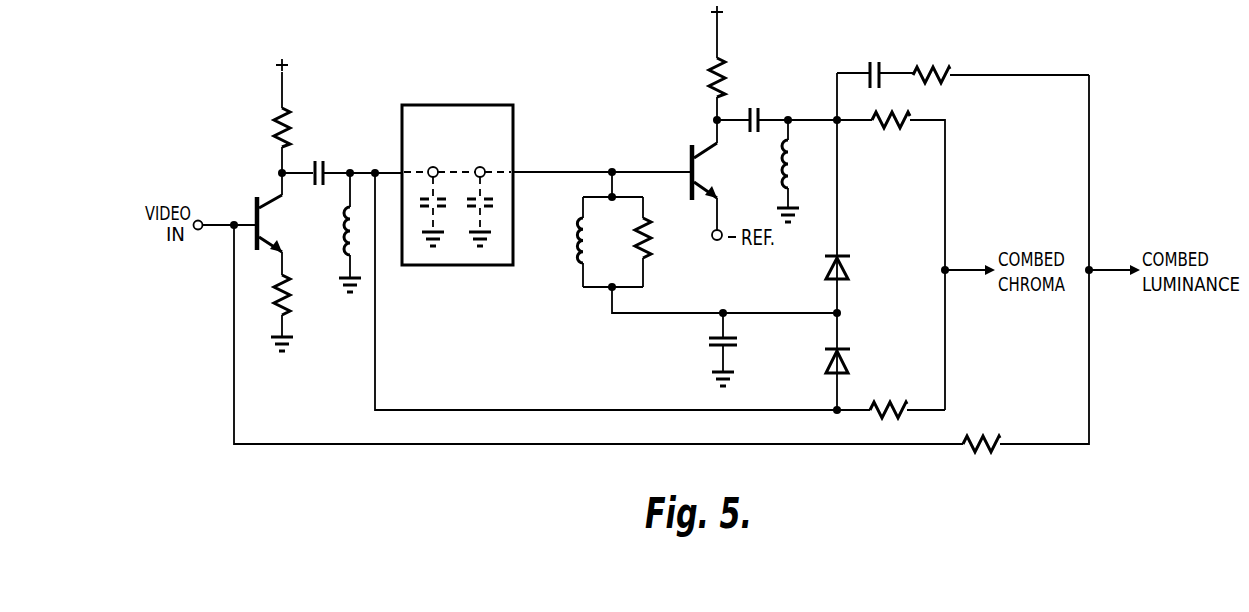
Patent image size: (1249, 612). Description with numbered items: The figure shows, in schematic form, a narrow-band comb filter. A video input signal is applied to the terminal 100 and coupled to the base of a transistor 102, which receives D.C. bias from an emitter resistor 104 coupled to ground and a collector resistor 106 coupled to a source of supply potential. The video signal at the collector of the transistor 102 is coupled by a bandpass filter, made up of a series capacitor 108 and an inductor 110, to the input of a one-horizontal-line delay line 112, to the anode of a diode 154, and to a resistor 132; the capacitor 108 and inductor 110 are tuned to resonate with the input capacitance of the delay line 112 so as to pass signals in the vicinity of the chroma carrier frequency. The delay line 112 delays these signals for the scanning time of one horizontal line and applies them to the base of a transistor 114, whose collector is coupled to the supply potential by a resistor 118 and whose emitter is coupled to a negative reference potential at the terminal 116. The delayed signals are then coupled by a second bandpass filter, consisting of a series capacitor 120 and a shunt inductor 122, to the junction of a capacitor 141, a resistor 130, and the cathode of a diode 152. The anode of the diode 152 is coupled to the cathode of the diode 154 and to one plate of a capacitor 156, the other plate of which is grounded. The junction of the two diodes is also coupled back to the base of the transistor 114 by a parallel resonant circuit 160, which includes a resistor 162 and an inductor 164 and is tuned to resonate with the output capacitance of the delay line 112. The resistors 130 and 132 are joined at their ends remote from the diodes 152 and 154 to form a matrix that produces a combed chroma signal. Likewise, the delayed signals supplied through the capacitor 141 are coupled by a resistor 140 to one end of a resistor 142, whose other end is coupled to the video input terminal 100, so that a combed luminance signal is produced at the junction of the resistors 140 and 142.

The terminal 100 is at (212, 198).
The transistor 102 is at (260, 230).
The emitter resistor 104 is at (292, 297).
The collector resistor 106 is at (270, 130).
The series capacitor 108 is at (328, 160).
The inductor 110 is at (342, 232).
The 1-H delay line 112 is at (472, 84).
The transistor 114 is at (700, 178).
The terminal 116 is at (712, 233).
The resistor 118 is at (709, 82).
The series capacitor 120 is at (761, 112).
The shunt inductor 122 is at (779, 166).
The resistor 130 is at (894, 128).
The resistor 132 is at (893, 385).
The resistor 140 is at (930, 63).
The capacitor 141 is at (876, 60).
The resistor 142 is at (982, 432).
The diode 152 is at (850, 262).
The diode 154 is at (827, 355).
The capacitor 156 is at (712, 345).
The parallel resonant circuit 160 is at (620, 252).
The resistor 162 is at (650, 250).
The inductor 164 is at (572, 246).